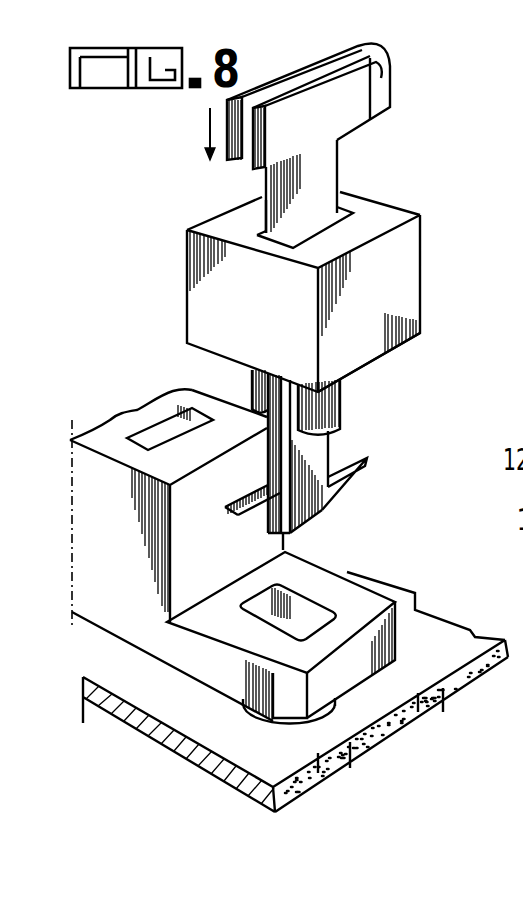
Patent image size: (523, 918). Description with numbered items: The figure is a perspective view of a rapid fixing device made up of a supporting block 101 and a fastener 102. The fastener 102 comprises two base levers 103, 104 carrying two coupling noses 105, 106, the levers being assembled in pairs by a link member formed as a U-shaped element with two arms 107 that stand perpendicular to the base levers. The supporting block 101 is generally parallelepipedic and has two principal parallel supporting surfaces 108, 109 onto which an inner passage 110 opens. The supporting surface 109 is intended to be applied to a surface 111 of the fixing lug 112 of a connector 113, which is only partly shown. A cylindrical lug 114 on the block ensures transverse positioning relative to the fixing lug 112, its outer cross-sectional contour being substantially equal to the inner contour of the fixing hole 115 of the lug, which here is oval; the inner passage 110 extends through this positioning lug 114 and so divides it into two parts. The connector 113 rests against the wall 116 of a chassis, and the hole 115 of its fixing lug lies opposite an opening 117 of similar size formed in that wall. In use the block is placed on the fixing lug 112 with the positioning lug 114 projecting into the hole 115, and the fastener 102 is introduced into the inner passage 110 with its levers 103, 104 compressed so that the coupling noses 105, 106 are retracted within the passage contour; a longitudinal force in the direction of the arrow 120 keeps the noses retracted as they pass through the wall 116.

The supporting block 101 is at (398, 256).
The fastener 102 is at (320, 172).
The base lever 103 is at (268, 458).
The base lever 104 is at (305, 460).
The coupling nose 105 is at (256, 512).
The coupling nose 106 is at (335, 488).
The arms of U-shaped element 107 is at (374, 90).
The principal supporting surface 108 is at (380, 222).
The principal supporting surface 109 is at (387, 353).
The inner passage 110 is at (262, 230).
The surface of fixing lug 111 is at (322, 572).
The fixing lug 112 is at (360, 658).
The connector 113 is at (132, 620).
The cylindrical lug 114 is at (328, 404).
The fixing hole 115 is at (300, 622).
The wall 116 is at (307, 772).
The opening 117 is at (333, 710).
The arrow 120 is at (207, 126).